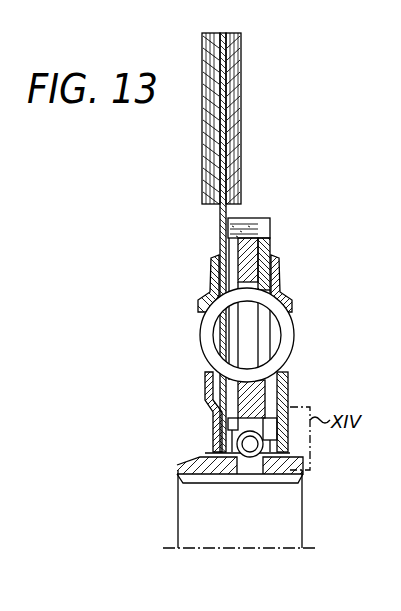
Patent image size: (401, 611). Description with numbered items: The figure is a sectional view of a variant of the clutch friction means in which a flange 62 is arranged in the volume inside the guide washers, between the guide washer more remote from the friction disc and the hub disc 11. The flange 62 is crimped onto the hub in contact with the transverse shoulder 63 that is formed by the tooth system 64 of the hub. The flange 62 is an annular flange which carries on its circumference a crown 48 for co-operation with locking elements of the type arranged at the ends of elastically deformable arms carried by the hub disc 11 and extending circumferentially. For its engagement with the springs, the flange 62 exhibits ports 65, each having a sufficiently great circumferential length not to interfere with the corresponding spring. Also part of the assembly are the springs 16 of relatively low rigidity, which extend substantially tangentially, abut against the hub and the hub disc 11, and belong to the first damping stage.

The hub disc 11 is at (237, 248).
The crown 48 is at (253, 219).
The ports 65 is at (272, 287).
The flange 62 is at (270, 402).
The tooth system 64 is at (239, 463).
The springs 16 is at (250, 462).
The transverse shoulder 63 is at (264, 463).